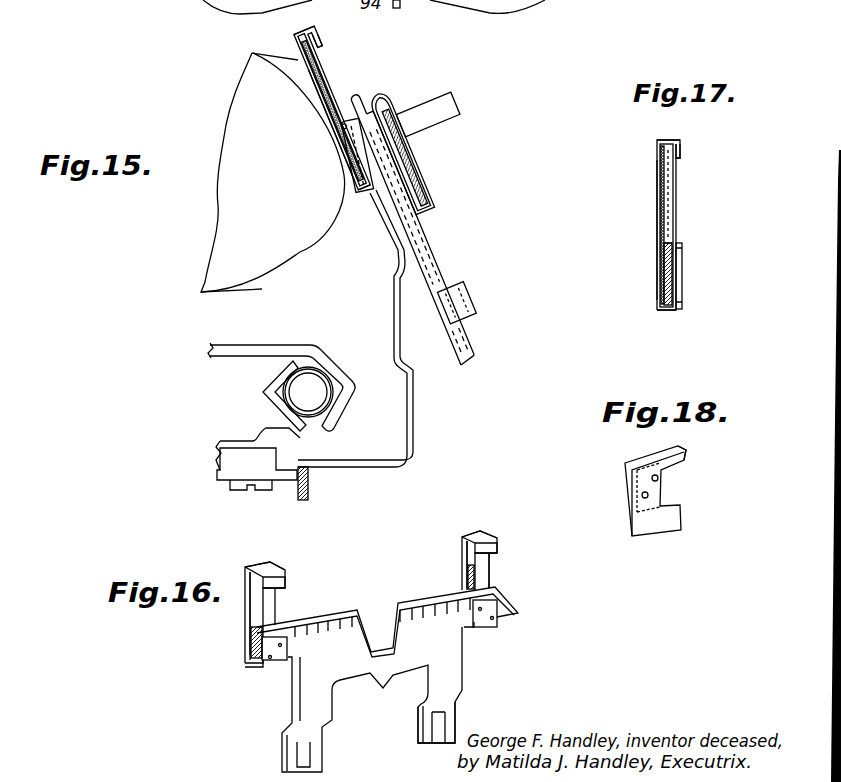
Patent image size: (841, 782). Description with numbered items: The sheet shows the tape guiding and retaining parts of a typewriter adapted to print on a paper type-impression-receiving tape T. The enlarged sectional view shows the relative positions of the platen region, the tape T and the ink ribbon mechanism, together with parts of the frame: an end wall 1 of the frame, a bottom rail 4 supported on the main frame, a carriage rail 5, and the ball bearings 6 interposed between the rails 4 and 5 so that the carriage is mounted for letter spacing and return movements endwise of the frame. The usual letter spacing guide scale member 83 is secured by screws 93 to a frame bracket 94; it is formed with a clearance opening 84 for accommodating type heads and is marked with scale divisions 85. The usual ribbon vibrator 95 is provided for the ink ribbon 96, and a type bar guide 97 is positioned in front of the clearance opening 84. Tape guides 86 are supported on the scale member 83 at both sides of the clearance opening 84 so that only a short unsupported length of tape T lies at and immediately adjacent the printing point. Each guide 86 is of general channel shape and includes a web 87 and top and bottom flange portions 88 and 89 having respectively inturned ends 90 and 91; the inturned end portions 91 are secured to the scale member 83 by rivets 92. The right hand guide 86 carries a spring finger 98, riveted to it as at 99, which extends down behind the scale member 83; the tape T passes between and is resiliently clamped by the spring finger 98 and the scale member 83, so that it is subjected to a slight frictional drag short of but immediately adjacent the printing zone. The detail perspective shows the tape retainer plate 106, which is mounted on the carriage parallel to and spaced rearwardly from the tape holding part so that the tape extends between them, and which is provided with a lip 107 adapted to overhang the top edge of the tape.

In FIG. 15, the end wall 1 is at (284, 281).
In FIG. 15, the bottom rail 4 is at (272, 406).
In FIG. 15, the carriage rail 5 is at (317, 347).
In FIG. 15, the ball bearings 6 is at (322, 386).
In FIG. 15, the letter spacing guide scale member 83 is at (390, 252).
In FIG. 17, the letter spacing guide scale member 83 is at (672, 240).
In FIG. 16, the letter spacing guide scale member 83 is at (458, 680).
In FIG. 16, the clearance opening 84 is at (395, 608).
In FIG. 16, the scale divisions 85 is at (332, 632).
In FIG. 15, the tape guide 86 is at (293, 56).
In FIG. 17, the tape guide 86 is at (656, 217).
In FIG. 16, the tape guide 86 is at (247, 631).
In FIG. 15, the web 87 is at (312, 84).
In FIG. 17, the web 87 is at (660, 268).
In FIG. 16, the web 87 is at (258, 604).
In FIG. 15, the top flange portion 88 is at (306, 34).
In FIG. 17, the top flange portion 88 is at (662, 140).
In FIG. 16, the top flange portion 88 is at (267, 566).
In FIG. 15, the bottom flange portion 89 is at (362, 197).
In FIG. 17, the bottom flange portion 89 is at (670, 312).
In FIG. 16, the bottom flange portion 89 is at (258, 666).
In FIG. 15, the inturned end 90 is at (320, 46).
In FIG. 17, the inturned end 90 is at (681, 150).
In FIG. 16, the inturned end 90 is at (287, 580).
In FIG. 15, the inturned end 91 is at (339, 122).
In FIG. 17, the inturned end 91 is at (682, 282).
In FIG. 16, the inturned end 91 is at (283, 668).
In FIG. 17, the rivets 92 is at (682, 256).
In FIG. 16, the rivets 92 is at (270, 665).
In FIG. 15, the screws 93 is at (446, 352).
In FIG. 15, the frame bracket 94 is at (418, 424).
In FIG. 15, the ribbon vibrator 95 is at (438, 204).
In FIG. 15, the ink ribbon 96 is at (426, 172).
In FIG. 15, the type bar guide 97 is at (440, 96).
In FIG. 17, the spring finger 98 is at (665, 235).
In FIG. 16, the spring finger 98 is at (489, 573).
In FIG. 17, the rivet 99 is at (661, 150).
In FIG. 17, the type-impression-receiving tape T is at (670, 190).
In FIG. 18, the tape retainer plate 106 is at (636, 475).
In FIG. 18, the lip 107 is at (683, 448).